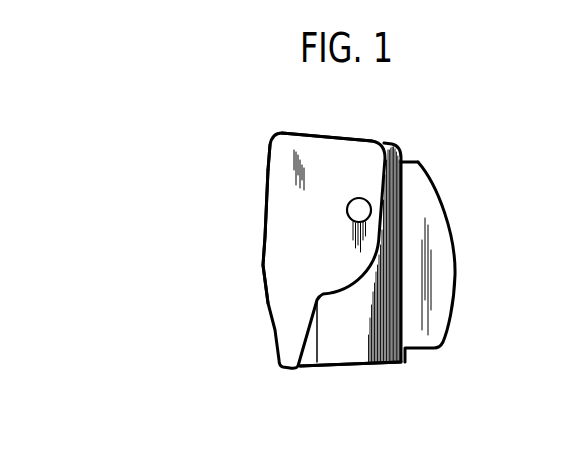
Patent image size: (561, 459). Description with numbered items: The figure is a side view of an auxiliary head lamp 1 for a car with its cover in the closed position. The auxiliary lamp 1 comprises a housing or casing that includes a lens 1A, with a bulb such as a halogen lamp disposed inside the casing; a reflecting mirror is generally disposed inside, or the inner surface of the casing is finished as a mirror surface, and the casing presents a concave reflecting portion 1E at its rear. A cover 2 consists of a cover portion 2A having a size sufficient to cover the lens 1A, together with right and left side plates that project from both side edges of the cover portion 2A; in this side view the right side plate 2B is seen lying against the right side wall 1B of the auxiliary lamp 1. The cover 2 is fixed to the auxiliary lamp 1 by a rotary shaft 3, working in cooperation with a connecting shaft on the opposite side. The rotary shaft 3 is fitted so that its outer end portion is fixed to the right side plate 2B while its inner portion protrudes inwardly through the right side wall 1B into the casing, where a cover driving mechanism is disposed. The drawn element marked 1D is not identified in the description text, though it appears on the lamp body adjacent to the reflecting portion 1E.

The auxiliary head lamp 1 is at (431, 168).
The lens 1A is at (308, 357).
The right side wall 1B is at (400, 188).
The shoulder 1D is at (400, 222).
The concave reflecting portion 1E is at (438, 248).
The cover 2 is at (257, 197).
The cover portion 2A is at (262, 287).
The right side plate 2B is at (322, 184).
The rotary shaft 3 is at (357, 212).